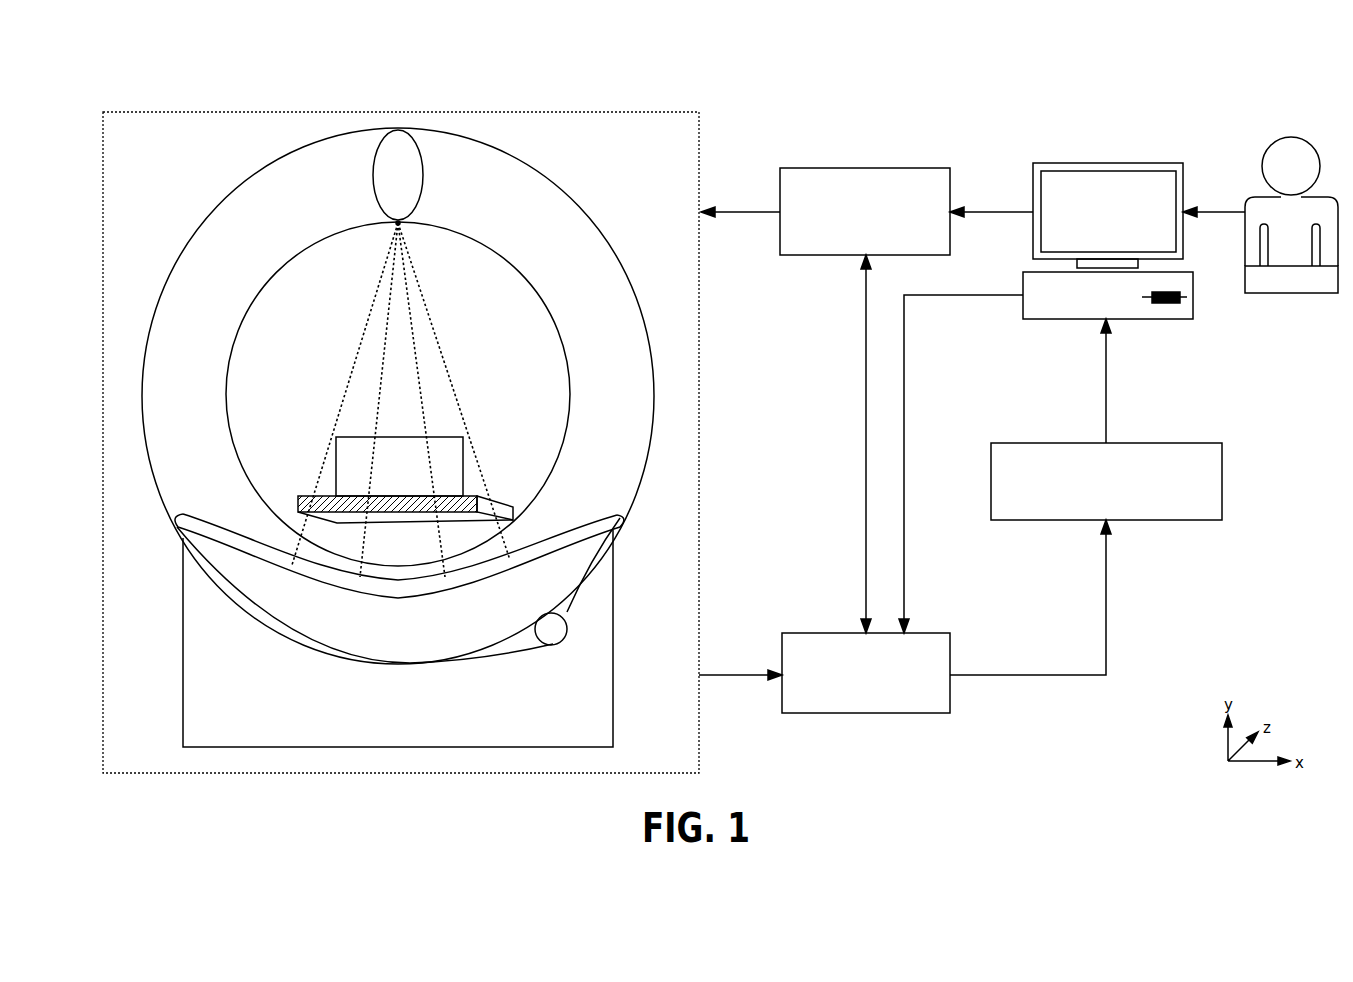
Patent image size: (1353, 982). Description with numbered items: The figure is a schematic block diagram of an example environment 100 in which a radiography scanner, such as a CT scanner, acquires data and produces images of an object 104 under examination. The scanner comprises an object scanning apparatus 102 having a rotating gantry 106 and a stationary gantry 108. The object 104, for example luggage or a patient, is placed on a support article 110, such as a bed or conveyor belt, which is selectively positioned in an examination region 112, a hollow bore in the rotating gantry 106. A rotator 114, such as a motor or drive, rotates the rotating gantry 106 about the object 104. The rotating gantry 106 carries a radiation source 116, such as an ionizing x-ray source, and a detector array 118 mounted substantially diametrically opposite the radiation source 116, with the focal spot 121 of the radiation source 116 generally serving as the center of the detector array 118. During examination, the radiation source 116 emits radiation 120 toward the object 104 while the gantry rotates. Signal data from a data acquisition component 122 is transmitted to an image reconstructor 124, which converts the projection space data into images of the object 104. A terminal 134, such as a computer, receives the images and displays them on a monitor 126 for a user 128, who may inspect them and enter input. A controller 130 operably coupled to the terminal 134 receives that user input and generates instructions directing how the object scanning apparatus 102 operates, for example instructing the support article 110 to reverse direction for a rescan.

The example environment 100 is at (1146, 70).
The object scanning apparatus 102 is at (378, 112).
The object 104 is at (463, 467).
The rotating gantry 106 is at (563, 189).
The stationary gantry 108 is at (613, 693).
The support article 110 is at (513, 518).
The examination region 112 is at (410, 385).
The rotator 114 is at (567, 631).
The radiation source 116 is at (423, 175).
The detector array 118 is at (407, 599).
The radiation 120 is at (383, 268).
The focal spot 121 is at (395, 222).
The data acquisition component 122 is at (950, 633).
The image reconstructor 124 is at (1222, 443).
The monitor 126 is at (1033, 172).
The user 128 is at (1263, 160).
The controller 130 is at (865, 168).
The terminal 134 is at (1023, 288).